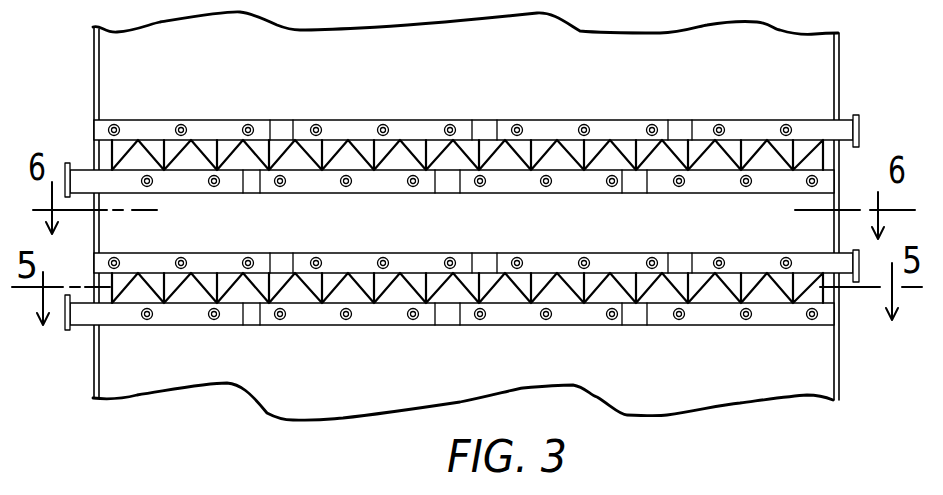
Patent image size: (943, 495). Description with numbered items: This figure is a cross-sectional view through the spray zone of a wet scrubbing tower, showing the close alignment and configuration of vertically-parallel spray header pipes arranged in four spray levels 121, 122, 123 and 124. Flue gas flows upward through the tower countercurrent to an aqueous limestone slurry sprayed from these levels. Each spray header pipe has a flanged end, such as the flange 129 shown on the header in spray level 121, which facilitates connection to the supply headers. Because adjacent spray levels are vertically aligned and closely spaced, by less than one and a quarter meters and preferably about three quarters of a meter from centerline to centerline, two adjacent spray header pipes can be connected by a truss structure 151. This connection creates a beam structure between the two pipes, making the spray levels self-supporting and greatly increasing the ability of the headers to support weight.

The spray level 121 is at (558, 121).
The spray level 122 is at (528, 194).
The spray level 123 is at (413, 253).
The spray level 124 is at (485, 325).
The flange 129 is at (856, 118).
The truss structure 151 is at (783, 153).